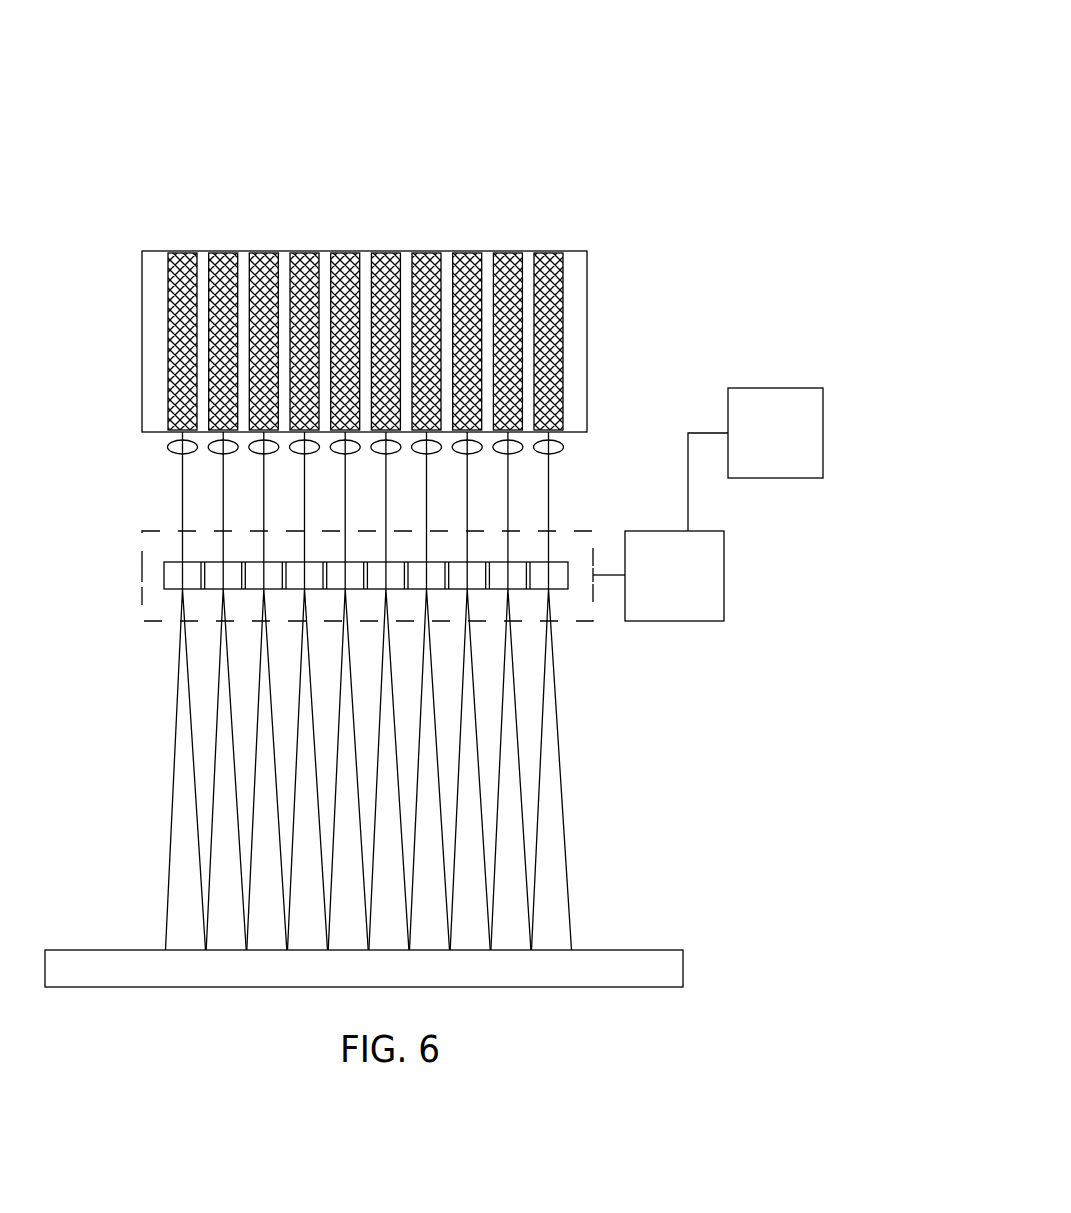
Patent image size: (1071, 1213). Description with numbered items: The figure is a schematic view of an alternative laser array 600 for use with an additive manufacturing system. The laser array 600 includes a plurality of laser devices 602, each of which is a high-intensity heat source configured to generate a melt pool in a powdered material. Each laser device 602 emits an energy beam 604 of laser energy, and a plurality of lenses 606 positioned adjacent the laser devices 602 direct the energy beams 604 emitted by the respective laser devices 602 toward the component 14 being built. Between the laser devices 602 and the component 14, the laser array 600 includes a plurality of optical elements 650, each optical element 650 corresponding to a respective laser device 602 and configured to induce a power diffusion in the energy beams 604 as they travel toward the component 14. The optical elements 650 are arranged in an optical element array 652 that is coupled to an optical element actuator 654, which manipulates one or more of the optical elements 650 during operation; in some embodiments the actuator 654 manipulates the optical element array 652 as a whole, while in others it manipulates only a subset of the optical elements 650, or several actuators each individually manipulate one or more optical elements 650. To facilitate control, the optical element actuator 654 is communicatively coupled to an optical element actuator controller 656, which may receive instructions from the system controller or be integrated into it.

The laser array 600 is at (627, 77).
The laser device 602 is at (507, 251).
The energy beam 604 is at (508, 497).
The lens 606 is at (184, 455).
The optical element 650 is at (568, 590).
The optical element array 652 is at (142, 575).
The optical element actuator 654 is at (724, 575).
The optical element actuator controller 656 is at (775, 388).
The component 14 is at (683, 968).